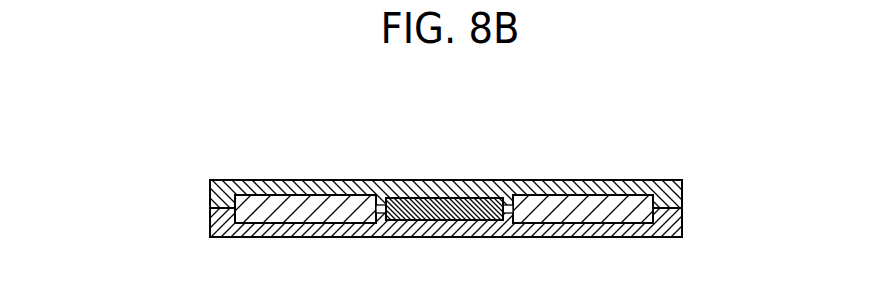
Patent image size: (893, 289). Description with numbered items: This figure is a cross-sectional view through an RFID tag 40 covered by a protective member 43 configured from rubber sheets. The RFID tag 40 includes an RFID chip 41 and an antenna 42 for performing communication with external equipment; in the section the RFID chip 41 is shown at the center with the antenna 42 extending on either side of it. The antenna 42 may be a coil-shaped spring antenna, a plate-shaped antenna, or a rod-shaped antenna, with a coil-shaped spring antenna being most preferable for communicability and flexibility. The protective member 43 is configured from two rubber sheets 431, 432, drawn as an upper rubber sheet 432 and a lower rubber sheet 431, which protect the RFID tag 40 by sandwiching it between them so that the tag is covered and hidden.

The RFID tag 40 is at (448, 149).
The RFID chip 41 is at (453, 176).
The antenna 42 is at (352, 190).
The protective member 43 is at (113, 168).
The rubber sheet 431 is at (209, 232).
The rubber sheet 432 is at (209, 193).